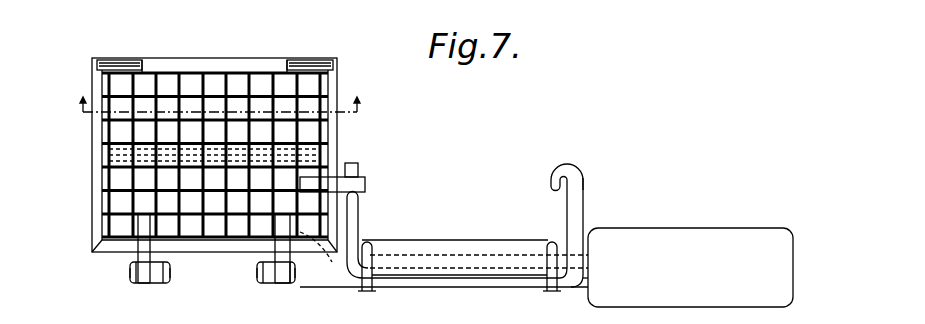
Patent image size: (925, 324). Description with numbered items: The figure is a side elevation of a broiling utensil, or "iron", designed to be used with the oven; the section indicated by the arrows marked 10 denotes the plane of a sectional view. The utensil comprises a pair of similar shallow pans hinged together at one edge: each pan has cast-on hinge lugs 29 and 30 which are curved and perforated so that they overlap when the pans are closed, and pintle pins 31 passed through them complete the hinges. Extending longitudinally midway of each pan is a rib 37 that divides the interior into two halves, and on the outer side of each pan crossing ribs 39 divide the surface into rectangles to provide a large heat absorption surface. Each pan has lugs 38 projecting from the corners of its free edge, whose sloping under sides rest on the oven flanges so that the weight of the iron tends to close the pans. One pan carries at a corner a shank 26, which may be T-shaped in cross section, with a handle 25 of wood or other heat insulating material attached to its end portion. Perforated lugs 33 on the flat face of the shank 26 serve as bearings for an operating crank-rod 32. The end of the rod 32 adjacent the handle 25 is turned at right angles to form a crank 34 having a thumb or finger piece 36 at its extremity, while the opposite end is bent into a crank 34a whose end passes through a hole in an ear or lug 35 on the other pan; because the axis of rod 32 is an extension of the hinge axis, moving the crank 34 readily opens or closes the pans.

The section line 10 is at (219, 96).
The handle 25 is at (688, 230).
The shank 26 is at (455, 243).
The hinge lug 29 is at (144, 284).
The hinge lug 30 is at (150, 284).
The pintle pin 31 is at (171, 273).
The operating crank-rod 32 is at (483, 278).
The perforated lug 33 is at (550, 252).
The crank 34 is at (577, 202).
The crank 34a is at (352, 218).
The ear or lug 35 is at (364, 186).
The thumb or finger piece 36 is at (564, 166).
The rib 37 is at (338, 148).
The lug 38 is at (112, 62).
The crossing ribs 39 is at (240, 118).